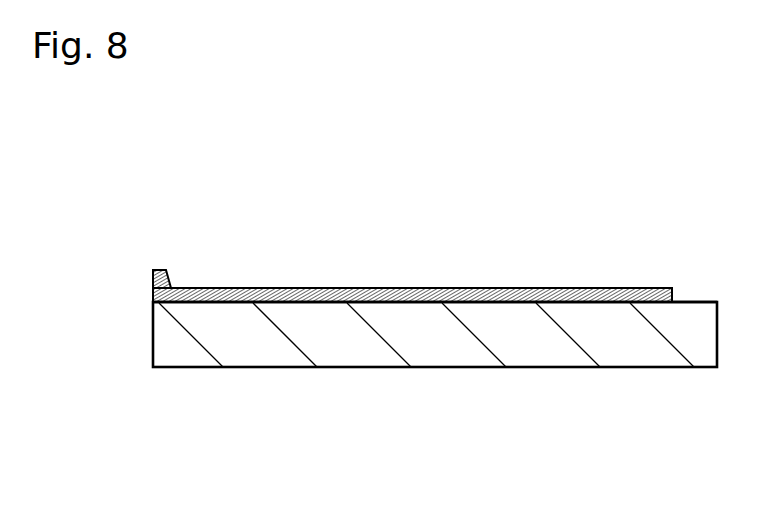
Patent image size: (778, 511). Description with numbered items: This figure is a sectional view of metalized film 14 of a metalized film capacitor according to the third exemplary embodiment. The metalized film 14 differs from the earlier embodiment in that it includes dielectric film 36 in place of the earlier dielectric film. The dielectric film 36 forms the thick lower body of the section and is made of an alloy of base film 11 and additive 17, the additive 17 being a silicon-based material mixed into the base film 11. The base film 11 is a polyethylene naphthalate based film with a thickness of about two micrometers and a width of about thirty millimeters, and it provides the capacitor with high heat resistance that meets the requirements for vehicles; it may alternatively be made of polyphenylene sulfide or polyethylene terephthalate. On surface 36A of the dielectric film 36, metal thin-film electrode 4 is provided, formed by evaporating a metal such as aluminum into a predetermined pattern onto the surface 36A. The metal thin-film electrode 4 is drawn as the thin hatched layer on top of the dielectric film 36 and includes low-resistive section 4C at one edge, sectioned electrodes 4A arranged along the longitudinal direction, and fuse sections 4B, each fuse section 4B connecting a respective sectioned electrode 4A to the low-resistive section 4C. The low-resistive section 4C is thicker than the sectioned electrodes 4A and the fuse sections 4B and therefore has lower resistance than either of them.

The dielectric film 36 is at (270, 445).
The additive 17 is at (205, 337).
The base film 11 is at (265, 353).
The metal thin-film electrode 4 is at (580, 300).
The sectioned electrode 4A is at (453, 288).
The fuse section 4B is at (190, 289).
The low-resistive section 4C is at (168, 274).
The surface of dielectric film 36A is at (307, 300).
The metalized film 14 is at (682, 227).